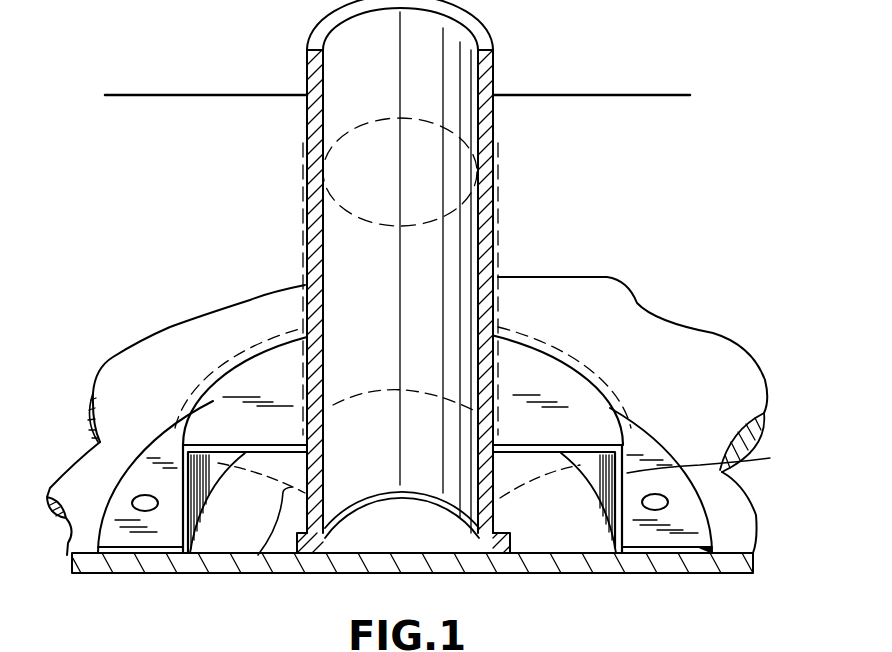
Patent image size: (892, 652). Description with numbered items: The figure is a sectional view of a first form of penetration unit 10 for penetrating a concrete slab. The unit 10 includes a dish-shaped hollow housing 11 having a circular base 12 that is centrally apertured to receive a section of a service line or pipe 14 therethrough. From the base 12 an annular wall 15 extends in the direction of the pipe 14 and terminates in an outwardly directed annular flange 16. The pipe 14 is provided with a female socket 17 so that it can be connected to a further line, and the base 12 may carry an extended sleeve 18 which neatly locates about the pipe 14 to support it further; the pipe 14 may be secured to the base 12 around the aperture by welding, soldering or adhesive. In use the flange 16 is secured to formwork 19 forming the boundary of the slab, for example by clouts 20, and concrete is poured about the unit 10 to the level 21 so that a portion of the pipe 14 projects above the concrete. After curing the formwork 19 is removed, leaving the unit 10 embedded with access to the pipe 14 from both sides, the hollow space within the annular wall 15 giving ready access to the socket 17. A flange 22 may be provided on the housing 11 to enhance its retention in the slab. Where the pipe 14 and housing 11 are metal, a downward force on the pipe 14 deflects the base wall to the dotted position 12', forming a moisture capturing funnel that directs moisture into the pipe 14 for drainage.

The penetration unit 10 is at (412, 319).
The dish-shaped hollow housing 11 is at (112, 443).
The circular base 12 is at (405, 399).
The deflected base wall 12' is at (403, 539).
The service line or pipe 14 is at (494, 140).
The annular wall 15 is at (494, 498).
The outwardly directed annular flange 16 is at (708, 556).
The female socket 17 is at (320, 572).
The extended sleeve 18 is at (501, 271).
The formwork 19 is at (543, 572).
The clouts 20 is at (670, 498).
The level 21 is at (597, 96).
The flange 22 is at (200, 380).